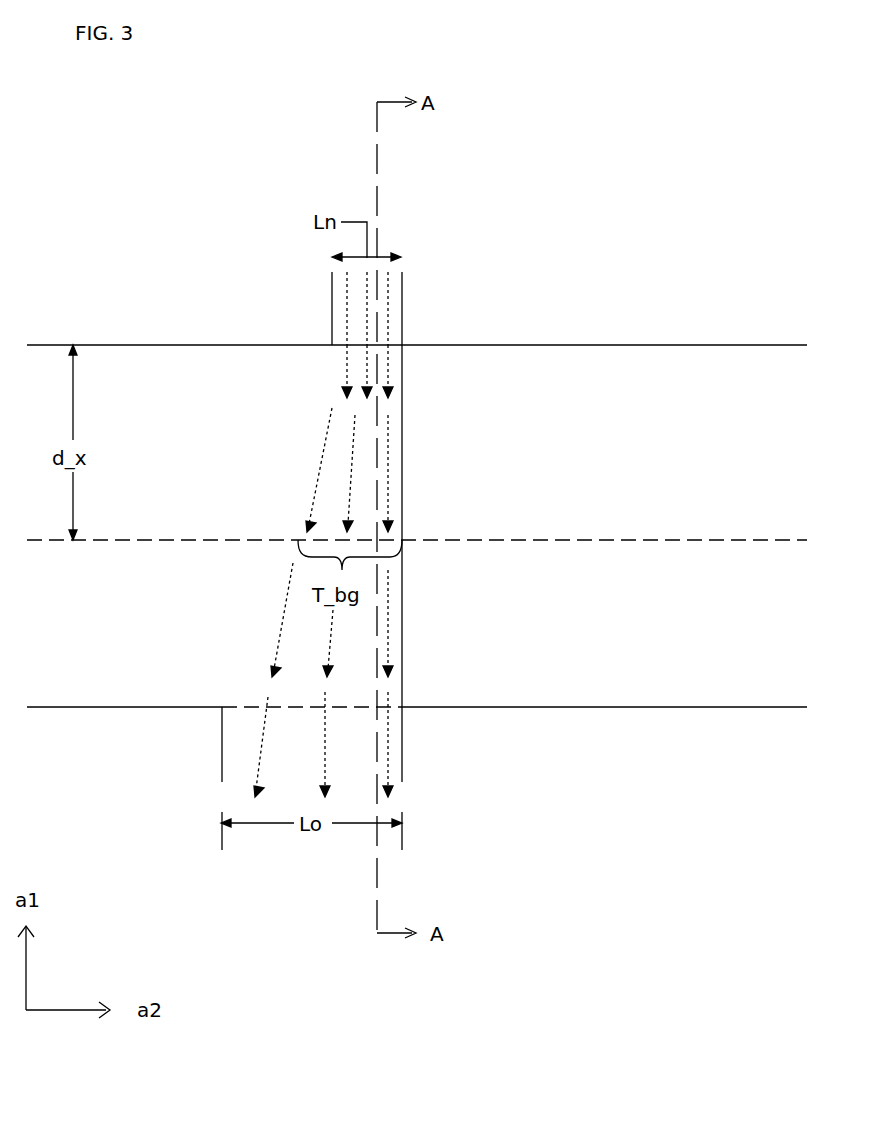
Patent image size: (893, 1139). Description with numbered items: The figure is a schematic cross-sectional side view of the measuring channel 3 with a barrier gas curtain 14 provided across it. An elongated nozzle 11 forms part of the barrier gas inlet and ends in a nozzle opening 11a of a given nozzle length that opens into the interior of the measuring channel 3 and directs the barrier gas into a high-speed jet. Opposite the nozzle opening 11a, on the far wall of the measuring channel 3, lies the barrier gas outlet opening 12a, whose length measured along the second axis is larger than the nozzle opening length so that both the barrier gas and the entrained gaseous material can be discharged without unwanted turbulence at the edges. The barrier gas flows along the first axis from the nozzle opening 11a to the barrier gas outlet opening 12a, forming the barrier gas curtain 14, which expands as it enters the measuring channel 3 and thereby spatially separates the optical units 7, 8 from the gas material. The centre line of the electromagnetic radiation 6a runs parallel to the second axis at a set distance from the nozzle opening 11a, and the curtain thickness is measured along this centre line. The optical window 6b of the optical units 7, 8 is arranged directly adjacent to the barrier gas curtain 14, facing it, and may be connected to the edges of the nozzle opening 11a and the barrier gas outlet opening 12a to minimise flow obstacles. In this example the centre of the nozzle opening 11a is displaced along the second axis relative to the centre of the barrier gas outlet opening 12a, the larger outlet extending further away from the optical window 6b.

The measuring channel 3 is at (58, 692).
The centre line of the electromagnetic radiation 6a is at (208, 541).
The optical window 6b is at (404, 446).
The first optical unit 7 is at (417, 370).
The second optical unit 8 is at (432, 393).
The nozzle 11 is at (415, 298).
The nozzle opening 11a is at (358, 343).
The barrier gas outlet opening 12a is at (250, 706).
The barrier gas curtain 14 is at (356, 442).